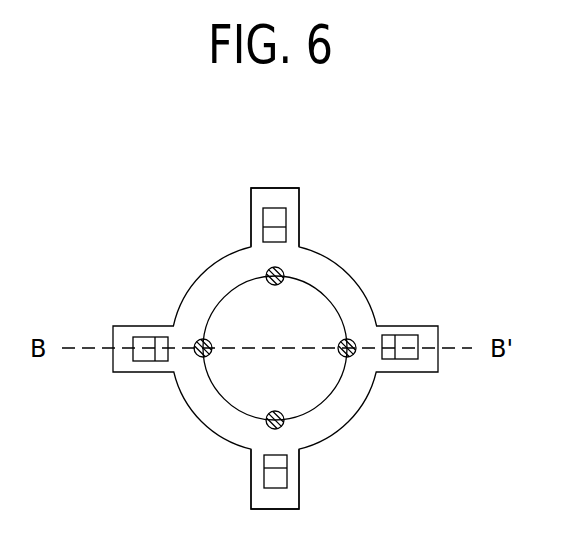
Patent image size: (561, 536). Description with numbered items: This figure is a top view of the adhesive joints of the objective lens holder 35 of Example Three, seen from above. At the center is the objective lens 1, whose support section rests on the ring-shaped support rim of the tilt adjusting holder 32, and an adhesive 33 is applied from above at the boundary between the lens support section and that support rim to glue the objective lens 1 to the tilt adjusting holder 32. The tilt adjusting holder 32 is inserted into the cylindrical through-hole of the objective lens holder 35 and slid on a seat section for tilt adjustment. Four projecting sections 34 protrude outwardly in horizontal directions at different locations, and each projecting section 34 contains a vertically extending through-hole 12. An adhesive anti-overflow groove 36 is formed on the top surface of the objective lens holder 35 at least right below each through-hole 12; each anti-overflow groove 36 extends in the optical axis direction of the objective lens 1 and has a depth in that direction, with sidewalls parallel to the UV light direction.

The objective lens 1 is at (275, 348).
The through-hole 12 is at (142, 347).
The tilt adjusting holder 32 is at (187, 391).
The adhesive 33 is at (283, 271).
The projecting section 34 is at (317, 178).
The objective lens holder 35 is at (335, 474).
The adhesive anti-overflow groove 36 is at (280, 460).